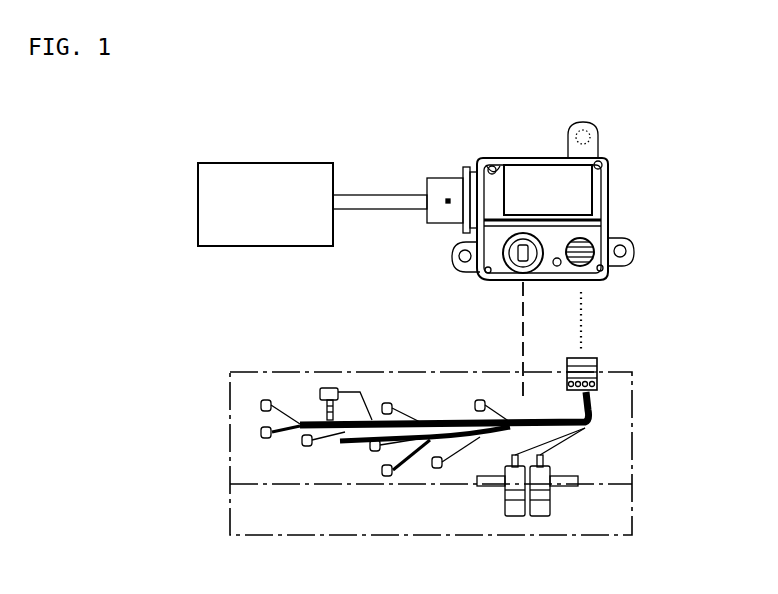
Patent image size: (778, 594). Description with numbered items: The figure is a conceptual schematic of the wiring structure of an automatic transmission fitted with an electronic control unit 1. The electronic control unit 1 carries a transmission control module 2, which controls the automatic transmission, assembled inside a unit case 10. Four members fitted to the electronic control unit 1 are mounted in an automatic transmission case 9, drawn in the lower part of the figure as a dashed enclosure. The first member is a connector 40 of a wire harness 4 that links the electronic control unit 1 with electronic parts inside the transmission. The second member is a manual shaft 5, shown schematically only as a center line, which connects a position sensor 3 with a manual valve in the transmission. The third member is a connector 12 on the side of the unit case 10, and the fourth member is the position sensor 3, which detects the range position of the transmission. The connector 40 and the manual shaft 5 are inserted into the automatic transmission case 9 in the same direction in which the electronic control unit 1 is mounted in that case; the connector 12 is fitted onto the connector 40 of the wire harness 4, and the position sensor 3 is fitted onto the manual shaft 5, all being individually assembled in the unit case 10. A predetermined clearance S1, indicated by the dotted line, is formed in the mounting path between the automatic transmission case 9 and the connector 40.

The electronic control unit 1 is at (616, 189).
The transmission control module 2 is at (540, 182).
The position sensor 3 is at (520, 282).
The unit case 10 is at (493, 164).
The connector 12 is at (600, 272).
The manual shaft 5 is at (523, 360).
The predetermined clearance S1 is at (565, 360).
The connector 40 is at (600, 362).
The automatic transmission case 9 is at (230, 440).
The wire harness 4 is at (592, 418).